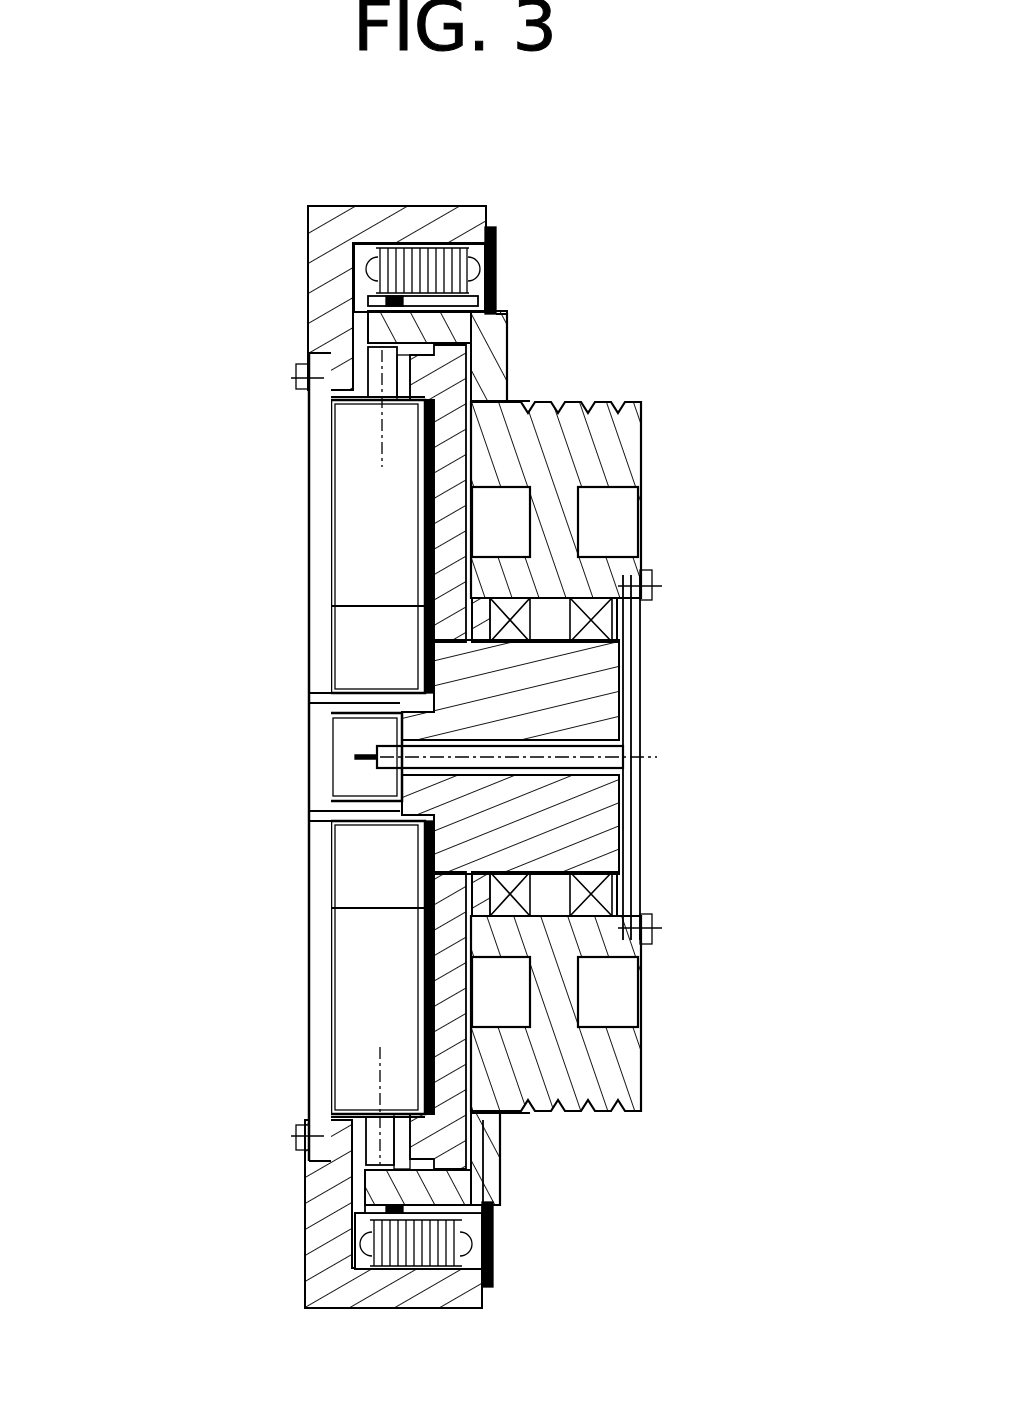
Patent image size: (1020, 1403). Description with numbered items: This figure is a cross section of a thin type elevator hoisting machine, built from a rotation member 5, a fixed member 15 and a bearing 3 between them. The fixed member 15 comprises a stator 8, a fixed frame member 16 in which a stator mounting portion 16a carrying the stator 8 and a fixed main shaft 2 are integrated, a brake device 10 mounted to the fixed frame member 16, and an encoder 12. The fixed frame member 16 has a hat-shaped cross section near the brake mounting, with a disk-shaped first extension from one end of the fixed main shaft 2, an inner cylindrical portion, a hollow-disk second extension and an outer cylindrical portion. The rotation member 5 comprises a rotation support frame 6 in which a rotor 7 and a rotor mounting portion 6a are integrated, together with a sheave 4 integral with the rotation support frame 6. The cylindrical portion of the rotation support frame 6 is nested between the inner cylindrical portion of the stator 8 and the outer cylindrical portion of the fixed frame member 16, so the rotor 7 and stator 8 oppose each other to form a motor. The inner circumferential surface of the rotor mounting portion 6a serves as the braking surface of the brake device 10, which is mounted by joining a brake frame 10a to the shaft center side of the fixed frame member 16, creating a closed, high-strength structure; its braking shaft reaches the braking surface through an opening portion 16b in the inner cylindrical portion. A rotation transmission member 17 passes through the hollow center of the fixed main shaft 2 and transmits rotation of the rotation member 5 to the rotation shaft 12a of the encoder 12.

The fixed main shaft 2 is at (569, 757).
The bearing 3 is at (640, 757).
The sheave 4 is at (621, 736).
The rotation member 5 is at (571, 755).
The rotation support frame 6 is at (527, 779).
The rotor mounting portion 6a is at (502, 727).
The rotor 7 is at (327, 758).
The stator 8 is at (406, 700).
The brake device 10 is at (258, 757).
The brake frame 10a is at (243, 757).
The encoder 12 is at (276, 794).
The rotation shaft 12a is at (238, 728).
The fixed member 15 is at (322, 757).
The fixed frame member 16 is at (309, 757).
The stator mounting portion 16a is at (569, 711).
The opening portion 16b is at (251, 758).
The rotation transmission member 17 is at (584, 810).